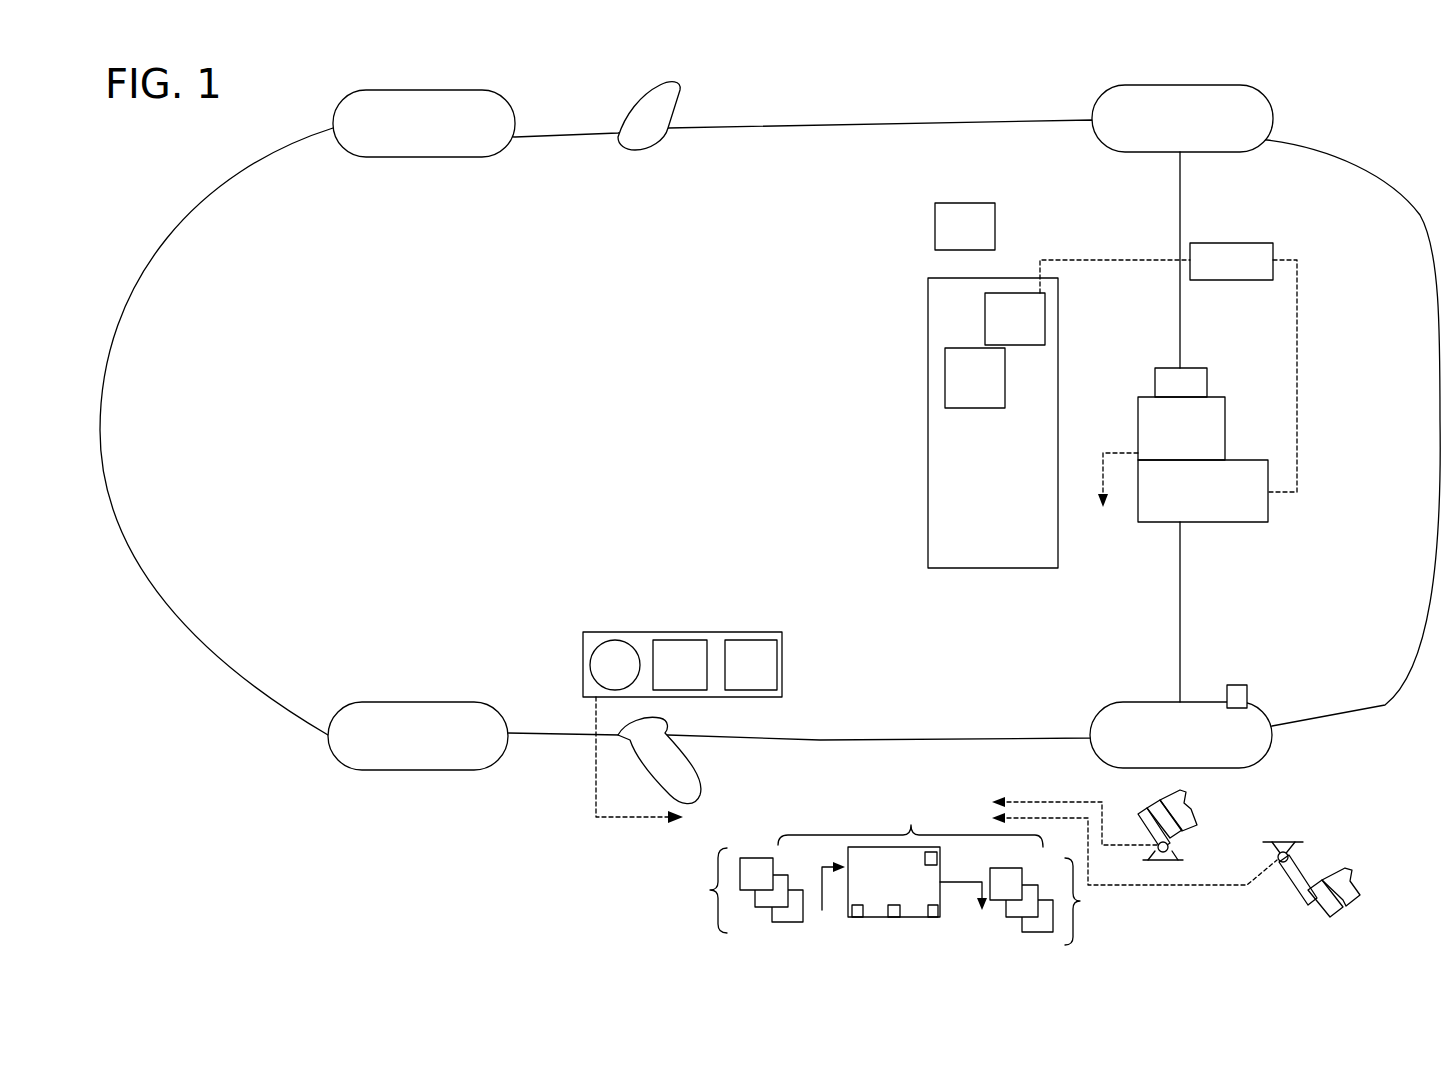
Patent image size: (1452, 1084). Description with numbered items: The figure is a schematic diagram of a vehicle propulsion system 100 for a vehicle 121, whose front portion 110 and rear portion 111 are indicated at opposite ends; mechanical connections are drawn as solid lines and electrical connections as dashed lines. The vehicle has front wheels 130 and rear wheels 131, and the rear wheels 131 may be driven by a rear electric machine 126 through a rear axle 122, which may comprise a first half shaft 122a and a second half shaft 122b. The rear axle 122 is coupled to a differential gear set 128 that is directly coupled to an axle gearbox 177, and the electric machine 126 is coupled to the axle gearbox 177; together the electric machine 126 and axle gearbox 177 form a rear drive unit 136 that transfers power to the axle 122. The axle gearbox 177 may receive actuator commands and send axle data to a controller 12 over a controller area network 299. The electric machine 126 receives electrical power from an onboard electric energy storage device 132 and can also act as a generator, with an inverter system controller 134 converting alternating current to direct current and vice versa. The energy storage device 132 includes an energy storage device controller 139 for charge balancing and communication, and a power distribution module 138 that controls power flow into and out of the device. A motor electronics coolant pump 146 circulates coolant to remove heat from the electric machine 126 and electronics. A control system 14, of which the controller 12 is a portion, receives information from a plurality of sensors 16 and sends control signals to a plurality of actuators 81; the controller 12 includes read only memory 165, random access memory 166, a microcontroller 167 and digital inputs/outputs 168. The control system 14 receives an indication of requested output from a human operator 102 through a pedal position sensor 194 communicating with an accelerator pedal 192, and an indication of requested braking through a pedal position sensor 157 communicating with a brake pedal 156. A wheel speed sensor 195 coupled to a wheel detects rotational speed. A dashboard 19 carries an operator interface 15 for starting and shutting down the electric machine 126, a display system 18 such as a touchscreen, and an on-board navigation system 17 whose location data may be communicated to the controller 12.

The vehicle propulsion system 100 is at (920, 98).
The front portion 110 is at (118, 229).
The rear portion 111 is at (1408, 167).
The vehicle 121 is at (1395, 735).
The front wheels 130 is at (438, 90).
The rear wheels 131 is at (1218, 85).
The rear axle 122 is at (1234, 427).
The first half shaft 122a is at (1182, 203).
The second half shaft 122b is at (1182, 627).
The inverter system controller 134 is at (1231, 261).
The rear drive unit 136 is at (1310, 502).
The differential gear set 128 is at (1181, 382).
The axle gearbox 177 is at (1234, 410).
The rear electric machine 126 is at (1203, 491).
The controller area network 299 is at (1113, 499).
The electric energy storage device 132 is at (993, 423).
The power distribution module 138 is at (1015, 319).
The electric energy storage device controller 139 is at (975, 378).
The motor electronics coolant pump 146 is at (965, 226).
The dashboard 19 is at (682, 708).
The operator interface 15 is at (615, 665).
The display system 18 is at (680, 665).
The on-board navigation system 17 is at (715, 632).
The control system 14 is at (898, 869).
The controller 12 is at (905, 897).
The non-transitory memory 165 is at (856, 917).
The random access memory 166 is at (893, 917).
The microcontroller 167 is at (933, 917).
The digital inputs/outputs 168 is at (938, 857).
The sensors 16 is at (742, 890).
The actuators 81 is at (1048, 901).
The pedal 192 is at (1165, 820).
The pedal position sensor 194 is at (1170, 846).
The human operator 102 is at (1178, 814).
The pedal position sensor 157 is at (1272, 858).
The brake pedal 156 is at (1305, 908).
The wheel speed sensor 195 is at (1240, 685).